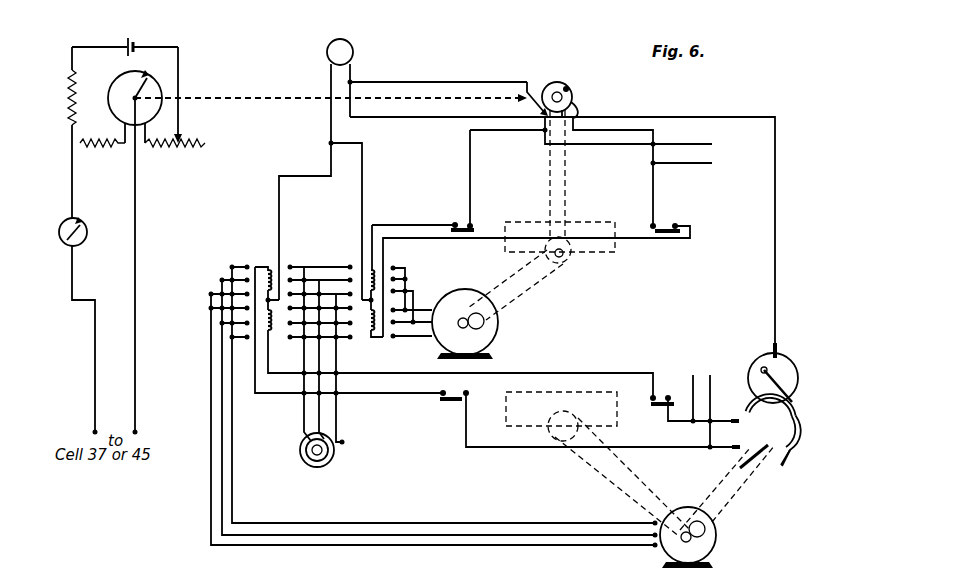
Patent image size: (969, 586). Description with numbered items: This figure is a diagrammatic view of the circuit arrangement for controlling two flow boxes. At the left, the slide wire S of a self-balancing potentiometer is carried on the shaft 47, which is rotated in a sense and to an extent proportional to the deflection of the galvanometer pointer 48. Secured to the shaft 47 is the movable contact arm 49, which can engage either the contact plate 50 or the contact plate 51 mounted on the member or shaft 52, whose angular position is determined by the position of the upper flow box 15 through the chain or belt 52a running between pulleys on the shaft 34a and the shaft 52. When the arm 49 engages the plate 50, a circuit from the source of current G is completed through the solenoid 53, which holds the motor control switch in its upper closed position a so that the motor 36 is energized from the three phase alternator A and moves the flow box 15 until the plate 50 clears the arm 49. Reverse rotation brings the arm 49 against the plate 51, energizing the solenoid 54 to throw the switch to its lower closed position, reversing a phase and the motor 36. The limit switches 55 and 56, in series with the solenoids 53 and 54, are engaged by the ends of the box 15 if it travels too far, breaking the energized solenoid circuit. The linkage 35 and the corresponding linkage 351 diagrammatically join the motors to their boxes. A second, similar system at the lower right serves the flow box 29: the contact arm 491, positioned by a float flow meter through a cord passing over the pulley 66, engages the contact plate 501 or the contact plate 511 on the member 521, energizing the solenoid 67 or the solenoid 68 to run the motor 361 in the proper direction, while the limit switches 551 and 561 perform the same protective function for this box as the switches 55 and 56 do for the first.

The slide wire S is at (160, 85).
The shaft 47 is at (242, 98).
The galvanometer pointer 48 is at (80, 228).
The source of current G is at (340, 52).
The movable contact arm 49 is at (541, 100).
The contact plate 50 is at (552, 83).
The contact plate 51 is at (578, 101).
The member or shaft 52 is at (568, 87).
The chain or belt 52a is at (568, 180).
The limit switch 55 is at (472, 223).
The limit switch 56 is at (672, 223).
The electromagnet or solenoid 53 is at (369, 269).
The solenoid 54 is at (371, 336).
The solenoid 67 is at (267, 272).
The solenoid 68 is at (272, 335).
The upper circuit closed position a is at (393, 268).
The three phase alternator A is at (306, 462).
The motor 36 is at (497, 332).
The connecting rod 35 is at (548, 284).
The shaft 34a is at (563, 257).
The upper flow box 15 is at (612, 252).
The flow box 29 is at (610, 392).
The contact 551 is at (452, 403).
The contact 561 is at (664, 407).
The pulley 66 is at (798, 382).
The contact arm 491 is at (778, 385).
The contact plate 501 is at (753, 411).
The contact plate 511 is at (787, 428).
The member 521 is at (783, 455).
The connecting rod 351 is at (664, 472).
The motor 361 is at (717, 536).